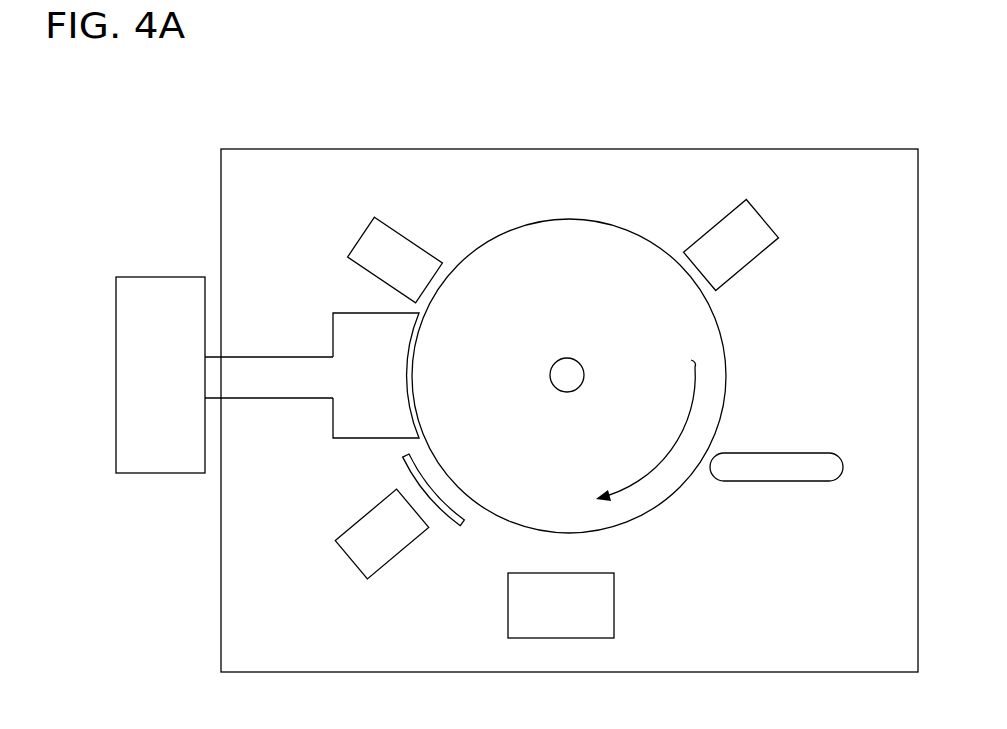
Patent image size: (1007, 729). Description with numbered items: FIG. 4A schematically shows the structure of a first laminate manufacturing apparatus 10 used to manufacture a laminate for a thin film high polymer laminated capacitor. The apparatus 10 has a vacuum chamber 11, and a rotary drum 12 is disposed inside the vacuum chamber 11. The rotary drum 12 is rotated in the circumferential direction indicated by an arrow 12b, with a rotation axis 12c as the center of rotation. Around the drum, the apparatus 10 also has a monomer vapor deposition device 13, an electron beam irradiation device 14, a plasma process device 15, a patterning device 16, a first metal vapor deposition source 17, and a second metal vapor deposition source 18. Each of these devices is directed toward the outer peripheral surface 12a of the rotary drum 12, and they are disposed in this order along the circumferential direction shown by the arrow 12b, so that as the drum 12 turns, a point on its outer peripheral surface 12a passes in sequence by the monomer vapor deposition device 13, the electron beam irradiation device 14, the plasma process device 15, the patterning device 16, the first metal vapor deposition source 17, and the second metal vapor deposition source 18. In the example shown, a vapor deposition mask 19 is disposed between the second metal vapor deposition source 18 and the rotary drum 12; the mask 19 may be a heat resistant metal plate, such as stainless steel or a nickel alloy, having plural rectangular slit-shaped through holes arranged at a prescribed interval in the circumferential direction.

The first laminate manufacturing apparatus 10 is at (842, 136).
The vacuum chamber 11 is at (285, 160).
The rotary drum 12 is at (513, 240).
The outer peripheral surface 12a is at (602, 222).
The arrow 12b is at (653, 409).
The rotation axis 12c is at (552, 375).
The monomer vapor deposition device 13 is at (355, 318).
The electron beam irradiation device 14 is at (410, 252).
The plasma process device 15 is at (757, 247).
The patterning device 16 is at (818, 458).
The first metal vapor deposition source 17 is at (608, 620).
The second metal vapor deposition source 18 is at (340, 530).
The vapor deposition mask 19 is at (405, 466).